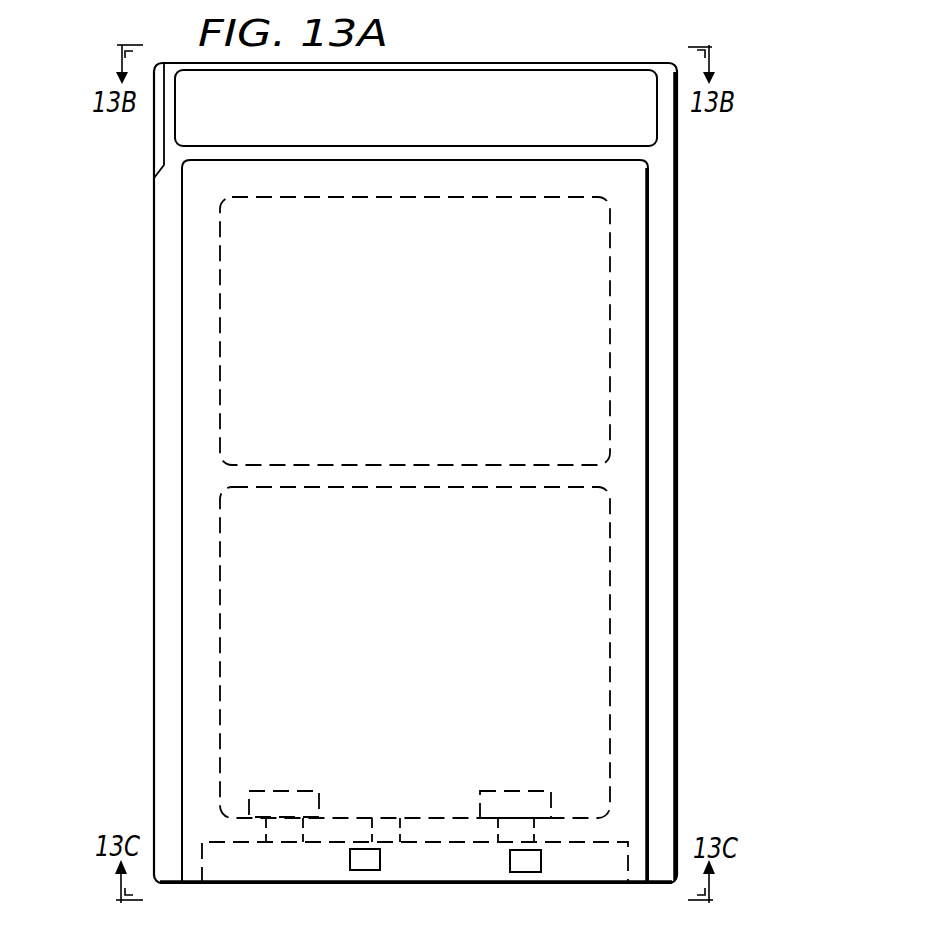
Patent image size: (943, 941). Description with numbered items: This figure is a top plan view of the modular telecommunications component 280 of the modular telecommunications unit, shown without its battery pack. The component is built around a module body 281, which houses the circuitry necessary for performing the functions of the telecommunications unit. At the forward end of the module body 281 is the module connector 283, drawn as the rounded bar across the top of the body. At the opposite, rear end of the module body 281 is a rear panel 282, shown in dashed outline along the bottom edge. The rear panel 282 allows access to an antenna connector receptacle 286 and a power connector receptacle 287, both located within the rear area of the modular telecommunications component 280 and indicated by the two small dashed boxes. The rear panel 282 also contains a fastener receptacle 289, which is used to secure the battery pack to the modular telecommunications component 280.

The modular telecommunications component 280 is at (105, 405).
The module body 281 is at (634, 274).
The rear panel 282 is at (585, 852).
The module connector 283 is at (588, 57).
The antenna connector receptacle 286 is at (530, 785).
The power connector receptacle 287 is at (276, 785).
The fastener receptacle 289 is at (377, 811).